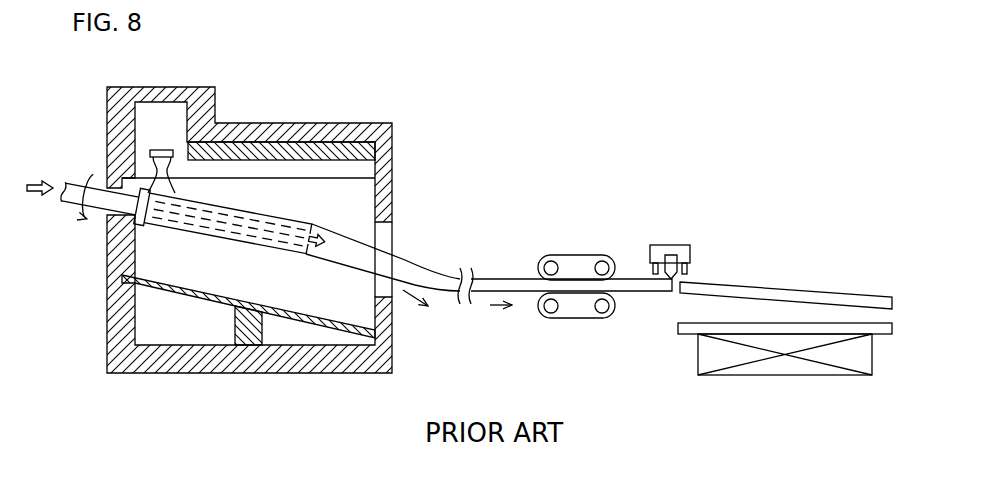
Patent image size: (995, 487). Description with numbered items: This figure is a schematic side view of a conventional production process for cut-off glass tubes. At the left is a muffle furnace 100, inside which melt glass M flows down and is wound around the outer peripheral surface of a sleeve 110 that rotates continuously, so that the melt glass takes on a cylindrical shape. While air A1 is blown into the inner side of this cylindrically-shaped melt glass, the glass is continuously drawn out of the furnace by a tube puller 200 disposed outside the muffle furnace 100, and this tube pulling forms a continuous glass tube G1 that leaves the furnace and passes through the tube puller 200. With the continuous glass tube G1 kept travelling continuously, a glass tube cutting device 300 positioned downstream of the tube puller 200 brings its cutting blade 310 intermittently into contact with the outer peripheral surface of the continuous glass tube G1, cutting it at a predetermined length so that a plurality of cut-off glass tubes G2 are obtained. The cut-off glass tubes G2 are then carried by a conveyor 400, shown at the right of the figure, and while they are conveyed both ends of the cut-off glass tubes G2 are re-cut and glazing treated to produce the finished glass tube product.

The muffle furnace 100 is at (298, 122).
The sleeve 110 is at (142, 228).
The tube puller 200 is at (575, 252).
The glass tube cutting device 300 is at (668, 239).
The cutting blade 310 is at (688, 270).
The conveyor 400 is at (786, 378).
The melt glass M is at (157, 163).
The air A1 is at (317, 280).
The continuous glass tube G1 is at (505, 278).
The cut-off glass tubes G2 is at (795, 287).